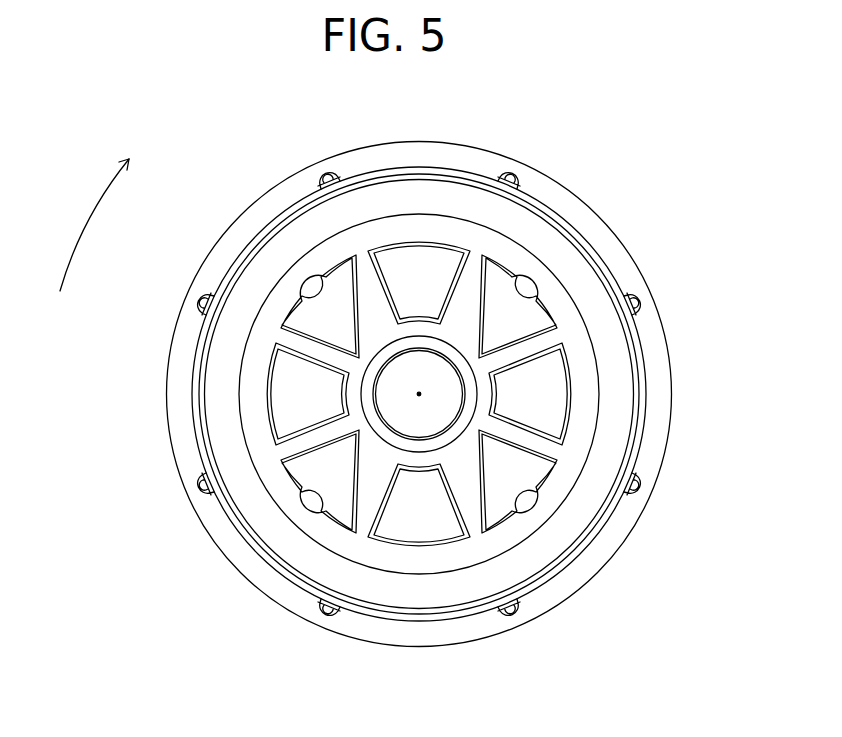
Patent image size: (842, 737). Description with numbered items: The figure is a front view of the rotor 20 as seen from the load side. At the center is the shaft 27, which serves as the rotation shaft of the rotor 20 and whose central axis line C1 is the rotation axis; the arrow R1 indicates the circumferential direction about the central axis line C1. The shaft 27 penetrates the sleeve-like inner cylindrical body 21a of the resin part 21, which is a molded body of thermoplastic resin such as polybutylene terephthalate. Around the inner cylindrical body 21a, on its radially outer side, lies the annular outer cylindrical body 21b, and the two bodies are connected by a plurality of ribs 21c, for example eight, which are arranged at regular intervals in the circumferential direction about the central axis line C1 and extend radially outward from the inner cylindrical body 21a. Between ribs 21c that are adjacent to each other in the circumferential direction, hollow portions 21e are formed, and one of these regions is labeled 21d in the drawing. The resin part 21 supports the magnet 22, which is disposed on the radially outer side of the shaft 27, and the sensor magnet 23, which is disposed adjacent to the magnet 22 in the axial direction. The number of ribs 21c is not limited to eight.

The rotor 20 is at (489, 126).
The resin part 21 is at (470, 336).
The inner cylindrical body 21a is at (468, 438).
The outer cylindrical body 21b is at (262, 452).
The ribs 21c is at (362, 257).
The protrusion 21d is at (312, 507).
The hollow portions 21e is at (339, 312).
The magnet 22 is at (652, 388).
The sensor magnet 23 is at (216, 390).
The shaft 27 is at (419, 420).
The central axis line C1 is at (418, 397).
The circumferential direction arrow R1 is at (91, 225).